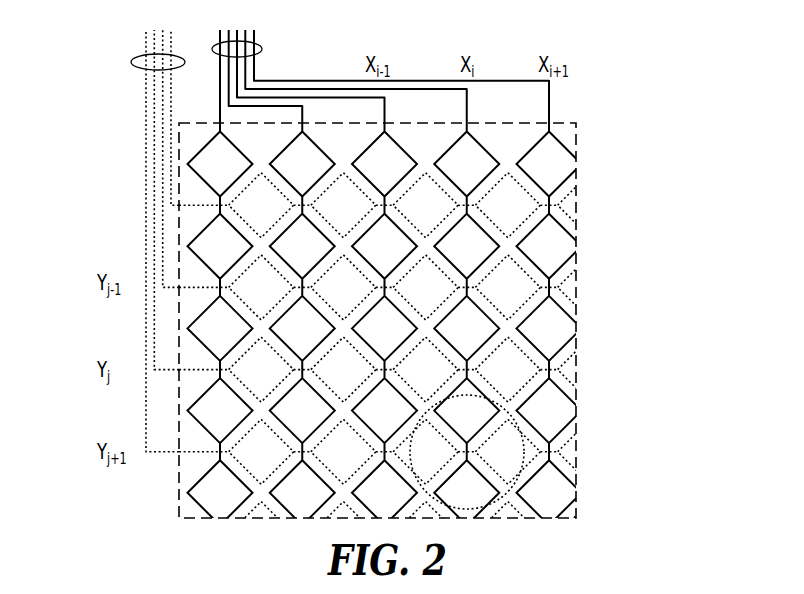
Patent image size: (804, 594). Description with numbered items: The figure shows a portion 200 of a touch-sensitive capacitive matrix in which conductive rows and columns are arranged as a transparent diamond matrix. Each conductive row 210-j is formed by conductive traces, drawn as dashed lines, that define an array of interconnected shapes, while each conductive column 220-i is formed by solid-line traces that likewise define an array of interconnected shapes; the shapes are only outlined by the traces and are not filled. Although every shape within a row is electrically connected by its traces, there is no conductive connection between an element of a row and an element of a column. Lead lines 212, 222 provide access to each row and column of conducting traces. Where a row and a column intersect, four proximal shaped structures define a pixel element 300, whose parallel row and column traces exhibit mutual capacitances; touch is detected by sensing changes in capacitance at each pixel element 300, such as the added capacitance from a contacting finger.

The portion of the touch-sensitive capacitive matrix 200 is at (655, 57).
The conductive row 210-j is at (570, 320).
The conductive column 220-i is at (500, 230).
The lead lines 212 is at (131, 62).
The lead lines 222 is at (262, 49).
The pixel element 300 is at (525, 452).